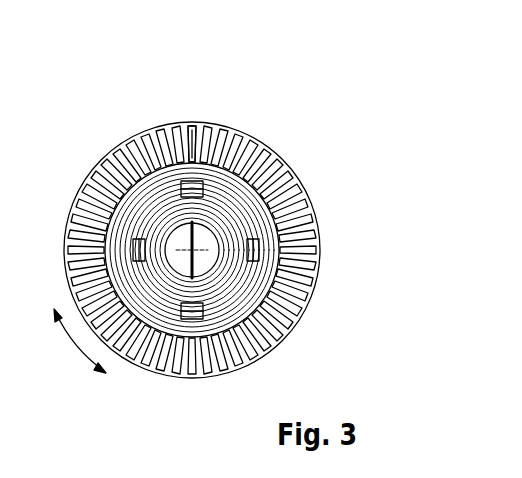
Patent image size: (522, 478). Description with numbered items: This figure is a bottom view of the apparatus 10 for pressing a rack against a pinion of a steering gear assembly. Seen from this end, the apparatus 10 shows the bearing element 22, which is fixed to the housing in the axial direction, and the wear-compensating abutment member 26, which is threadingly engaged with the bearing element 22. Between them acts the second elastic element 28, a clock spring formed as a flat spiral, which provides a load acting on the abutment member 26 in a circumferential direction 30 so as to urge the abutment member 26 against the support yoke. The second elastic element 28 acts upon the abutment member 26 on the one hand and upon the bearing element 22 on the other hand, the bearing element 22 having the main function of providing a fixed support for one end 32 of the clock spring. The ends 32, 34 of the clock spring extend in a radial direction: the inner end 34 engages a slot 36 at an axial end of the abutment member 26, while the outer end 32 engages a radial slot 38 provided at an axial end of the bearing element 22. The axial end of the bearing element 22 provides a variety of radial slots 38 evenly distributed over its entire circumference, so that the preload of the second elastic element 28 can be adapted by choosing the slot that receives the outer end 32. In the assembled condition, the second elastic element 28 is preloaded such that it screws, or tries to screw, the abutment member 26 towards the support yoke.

The apparatus 10 is at (262, 80).
The bearing element 22 is at (163, 363).
The wear-compensating abutment member 26 is at (203, 262).
The second elastic element 28 is at (105, 252).
The circumferential direction 30 is at (72, 347).
The outer end of the clock spring 32 is at (197, 153).
The inner end of the clock spring 34 is at (207, 233).
The slot 36 is at (196, 250).
The radial slots 38 is at (104, 170).